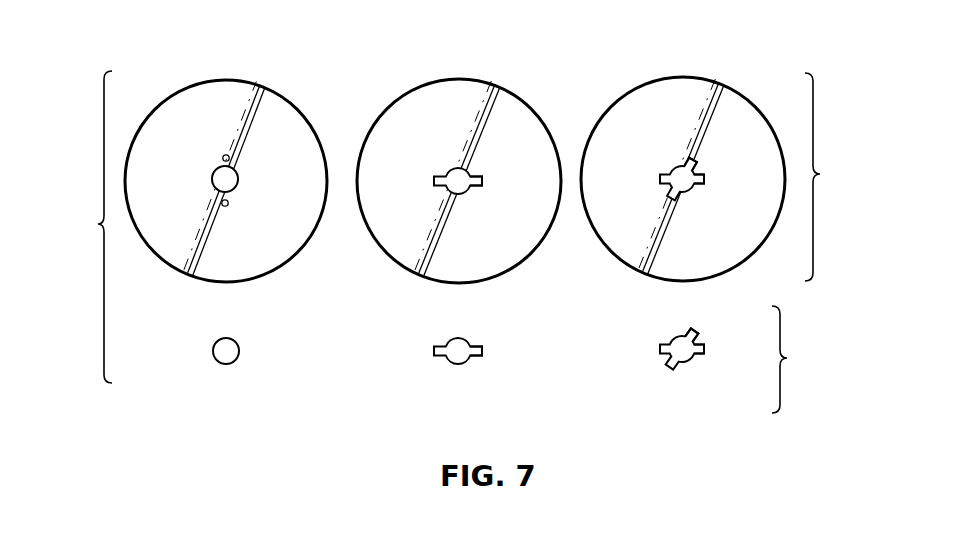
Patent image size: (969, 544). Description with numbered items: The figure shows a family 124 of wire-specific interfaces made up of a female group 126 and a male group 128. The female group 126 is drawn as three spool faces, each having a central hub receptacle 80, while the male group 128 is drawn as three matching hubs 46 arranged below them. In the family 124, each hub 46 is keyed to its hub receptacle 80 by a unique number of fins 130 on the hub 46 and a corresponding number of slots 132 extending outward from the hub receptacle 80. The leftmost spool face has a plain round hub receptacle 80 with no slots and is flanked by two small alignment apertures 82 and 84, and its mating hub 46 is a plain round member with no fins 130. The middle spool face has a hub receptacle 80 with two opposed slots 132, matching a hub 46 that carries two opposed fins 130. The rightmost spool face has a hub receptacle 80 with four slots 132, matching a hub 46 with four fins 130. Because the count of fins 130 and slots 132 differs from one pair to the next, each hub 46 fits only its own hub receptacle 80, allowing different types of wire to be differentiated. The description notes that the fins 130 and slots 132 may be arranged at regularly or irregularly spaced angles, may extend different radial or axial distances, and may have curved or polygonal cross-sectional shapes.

The hub 46 is at (215, 340).
The hub receptacle 80 is at (212, 178).
The alignment aperture 82 is at (229, 206).
The alignment aperture 84 is at (222, 153).
The family 124 is at (98, 223).
The female group 126 is at (820, 173).
The male group 128 is at (787, 357).
The fin 130 is at (482, 354).
The slot 132 is at (480, 186).